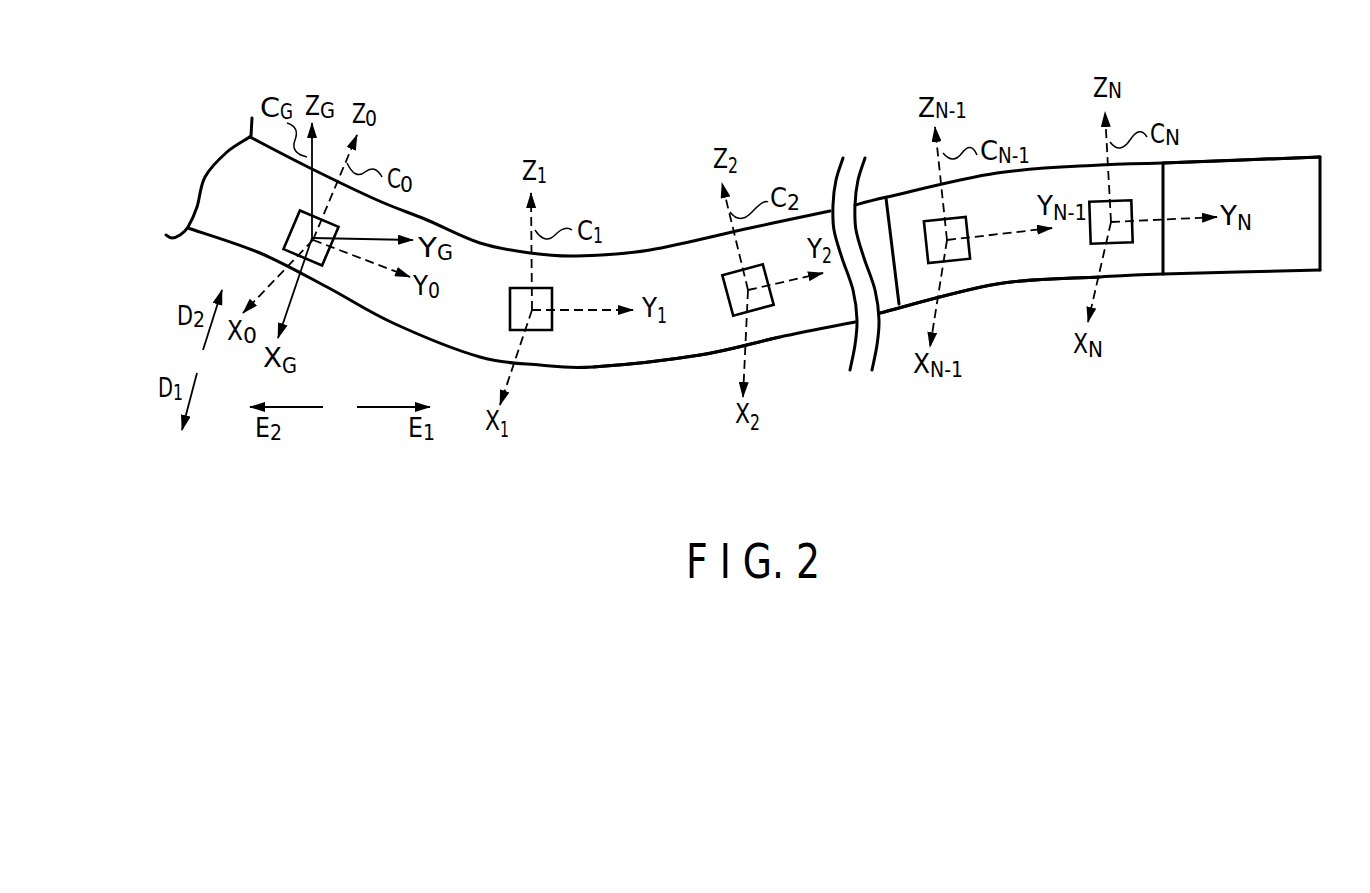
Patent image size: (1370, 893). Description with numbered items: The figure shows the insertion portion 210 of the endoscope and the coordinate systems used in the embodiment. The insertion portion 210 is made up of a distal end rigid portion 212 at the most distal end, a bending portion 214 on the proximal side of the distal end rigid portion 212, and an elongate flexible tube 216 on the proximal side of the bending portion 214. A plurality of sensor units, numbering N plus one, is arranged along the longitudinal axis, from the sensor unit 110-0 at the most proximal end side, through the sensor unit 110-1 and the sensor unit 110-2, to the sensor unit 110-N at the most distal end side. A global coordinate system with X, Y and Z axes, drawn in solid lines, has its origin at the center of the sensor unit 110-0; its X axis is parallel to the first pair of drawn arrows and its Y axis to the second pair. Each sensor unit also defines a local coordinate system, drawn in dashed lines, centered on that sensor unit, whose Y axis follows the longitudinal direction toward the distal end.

The insertion portion 210 is at (1018, 110).
The distal end rigid portion 212 is at (1260, 260).
The bending portion 214 is at (998, 283).
The flexible tube 216 is at (658, 360).
The sensor unit 110-0 is at (328, 262).
The sensor unit 110-1 is at (553, 317).
The sensor unit 110-2 is at (773, 293).
The sensor unit 110-N is at (1135, 237).